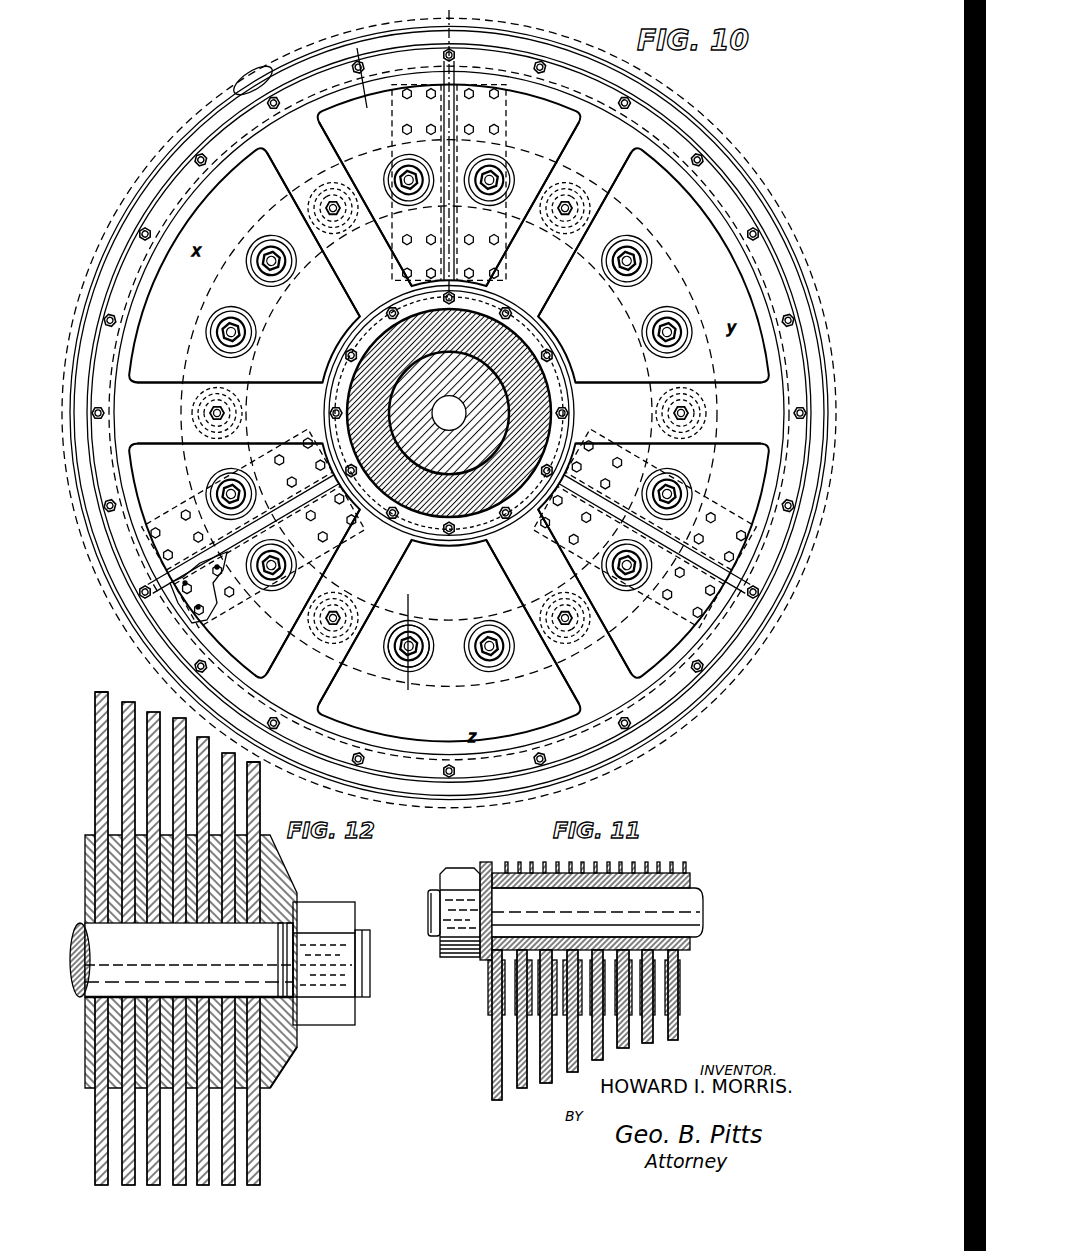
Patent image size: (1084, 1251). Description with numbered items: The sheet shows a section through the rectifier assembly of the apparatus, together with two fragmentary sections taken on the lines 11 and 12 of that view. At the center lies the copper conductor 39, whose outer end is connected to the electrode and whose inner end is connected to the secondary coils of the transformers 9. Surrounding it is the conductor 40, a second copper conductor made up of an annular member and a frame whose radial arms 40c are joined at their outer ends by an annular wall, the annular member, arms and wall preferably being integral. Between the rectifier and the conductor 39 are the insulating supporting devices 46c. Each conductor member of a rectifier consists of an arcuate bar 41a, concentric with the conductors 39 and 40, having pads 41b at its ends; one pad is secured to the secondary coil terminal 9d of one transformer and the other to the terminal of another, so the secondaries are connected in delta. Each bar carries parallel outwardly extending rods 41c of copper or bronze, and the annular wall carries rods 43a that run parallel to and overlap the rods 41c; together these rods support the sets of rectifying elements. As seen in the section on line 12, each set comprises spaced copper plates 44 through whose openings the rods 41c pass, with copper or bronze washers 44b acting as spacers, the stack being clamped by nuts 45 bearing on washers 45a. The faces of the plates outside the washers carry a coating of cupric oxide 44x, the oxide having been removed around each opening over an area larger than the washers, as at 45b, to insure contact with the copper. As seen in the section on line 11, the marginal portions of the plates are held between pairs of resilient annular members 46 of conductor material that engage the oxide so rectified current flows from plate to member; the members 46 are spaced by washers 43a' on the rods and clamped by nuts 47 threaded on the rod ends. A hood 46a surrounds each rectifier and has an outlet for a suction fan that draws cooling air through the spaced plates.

In FIG. 10, the conductor 39 is at (419, 458).
In FIG. 10, the conductor 40 is at (434, 508).
In FIG. 10, the radial arms 40c is at (173, 385).
In FIG. 10, the bar 41a is at (462, 613).
In FIG. 10, the pads 41b is at (186, 514).
In FIG. 10, the rods 41c is at (257, 333).
In FIG. 12, the rods 41c is at (97, 938).
In FIG. 11, the rods 43a is at (622, 911).
In FIG. 11, the washers 43a' is at (618, 853).
In FIG. 10, the plates 44 is at (616, 366).
In FIG. 12, the plates 44 is at (105, 997).
In FIG. 11, the plates 44 is at (498, 1098).
In FIG. 12, the washers 44b is at (163, 997).
In FIG. 12, the cupric oxide 44x is at (101, 692).
In FIG. 11, the cupric oxide 44x is at (492, 1062).
In FIG. 10, the nuts 45 is at (688, 322).
In FIG. 12, the nuts 45 is at (352, 903).
In FIG. 12, the washers 45a is at (285, 1052).
In FIG. 10, the uncoated area 45b is at (385, 658).
In FIG. 12, the uncoated area 45b is at (258, 806).
In FIG. 11, the resilient annular members 46 is at (690, 950).
In FIG. 10, the hood 46a is at (465, 5).
In FIG. 10, the supporting devices 46c is at (543, 326).
In FIG. 11, the nuts 47 is at (465, 953).
In FIG. 10, the terminal 9d is at (183, 575).
In FIG. 10, the transformers 9 is at (468, 8).
In FIG. 10, the section line 11— 11 is at (352, 50).
In FIG. 10, the section line 12— 12 is at (405, 594).